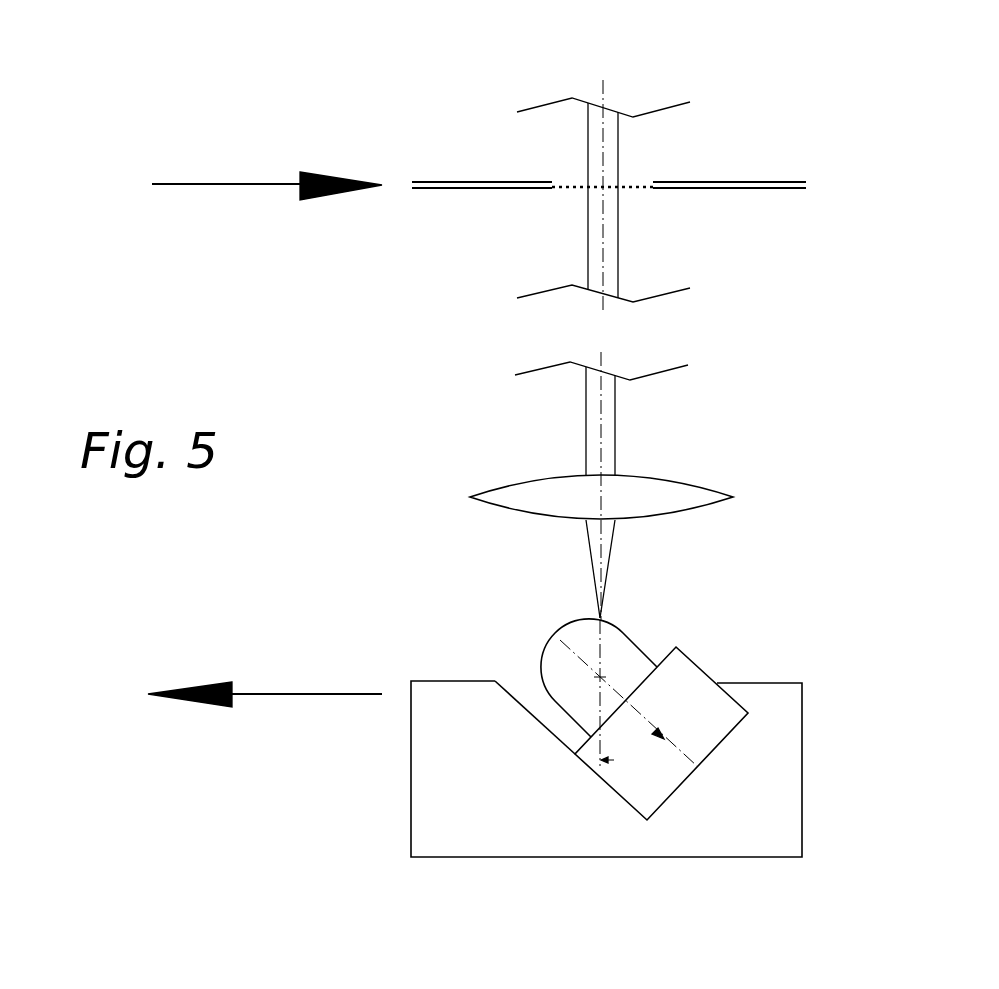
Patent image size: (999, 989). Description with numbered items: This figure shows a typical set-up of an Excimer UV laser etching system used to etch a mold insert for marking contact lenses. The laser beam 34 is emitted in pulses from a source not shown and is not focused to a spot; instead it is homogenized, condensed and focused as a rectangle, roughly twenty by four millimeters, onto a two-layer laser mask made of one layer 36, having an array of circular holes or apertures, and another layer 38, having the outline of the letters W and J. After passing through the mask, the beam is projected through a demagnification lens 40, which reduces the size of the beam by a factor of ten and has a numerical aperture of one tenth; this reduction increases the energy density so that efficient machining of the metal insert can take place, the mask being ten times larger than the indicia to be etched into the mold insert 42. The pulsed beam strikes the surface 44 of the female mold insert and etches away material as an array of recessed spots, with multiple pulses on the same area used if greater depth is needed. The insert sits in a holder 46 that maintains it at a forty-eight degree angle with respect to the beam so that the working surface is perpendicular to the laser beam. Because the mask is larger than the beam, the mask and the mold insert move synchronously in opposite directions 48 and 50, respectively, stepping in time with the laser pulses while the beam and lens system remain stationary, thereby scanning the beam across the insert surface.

The laser beam 34 is at (610, 115).
The mask layer 36 is at (816, 191).
The mask layer 38 is at (816, 181).
The demagnification lens 40 is at (758, 498).
The mold insert 42 is at (702, 645).
The surface of the mold insert 44 is at (607, 615).
The holder 46 is at (813, 732).
The direction of mask movement 48 is at (228, 185).
The direction of mold insert movement 50 is at (288, 694).